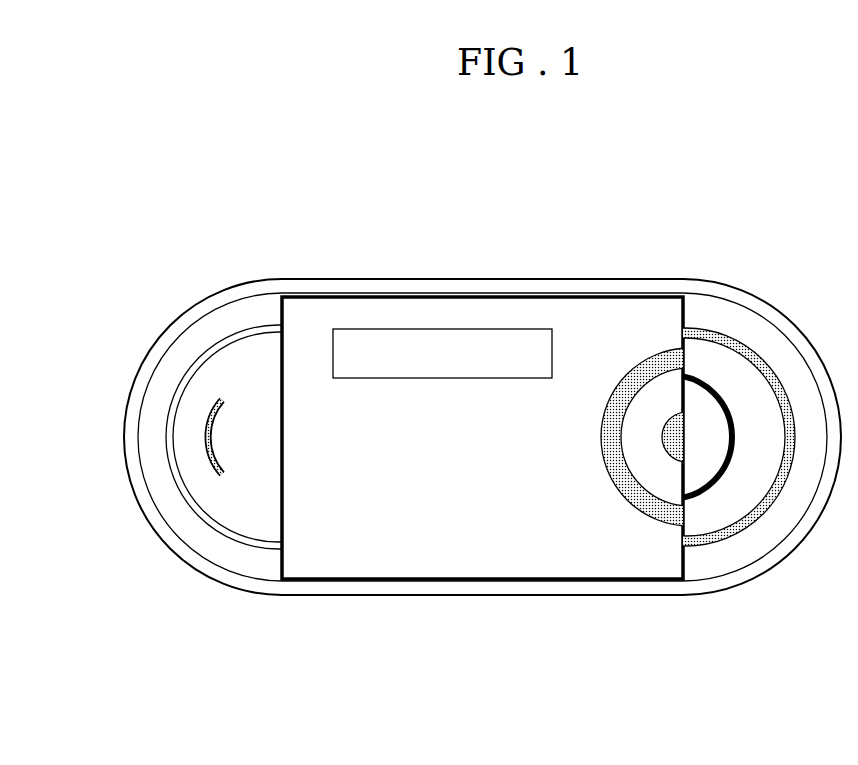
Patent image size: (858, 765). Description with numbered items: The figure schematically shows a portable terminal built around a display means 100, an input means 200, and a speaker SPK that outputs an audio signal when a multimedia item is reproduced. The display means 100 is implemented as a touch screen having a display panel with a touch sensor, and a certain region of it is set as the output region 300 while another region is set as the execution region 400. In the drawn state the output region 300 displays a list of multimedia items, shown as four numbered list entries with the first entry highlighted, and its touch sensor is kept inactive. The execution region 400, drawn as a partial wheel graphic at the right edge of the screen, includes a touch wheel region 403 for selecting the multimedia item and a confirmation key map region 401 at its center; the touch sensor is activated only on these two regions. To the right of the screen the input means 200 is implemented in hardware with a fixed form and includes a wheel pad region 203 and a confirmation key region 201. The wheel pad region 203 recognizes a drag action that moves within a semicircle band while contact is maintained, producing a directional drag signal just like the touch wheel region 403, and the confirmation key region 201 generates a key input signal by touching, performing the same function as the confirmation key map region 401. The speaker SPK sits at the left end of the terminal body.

The display means 100 is at (348, 580).
The speaker SPK is at (210, 436).
The output region 300 is at (596, 334).
The execution region 400 is at (613, 540).
The confirmation key map region 401 is at (668, 466).
The touch wheel region 403 is at (602, 470).
The input means 200 is at (696, 519).
The confirmation key region 201 is at (704, 467).
The wheel pad region 203 is at (757, 466).